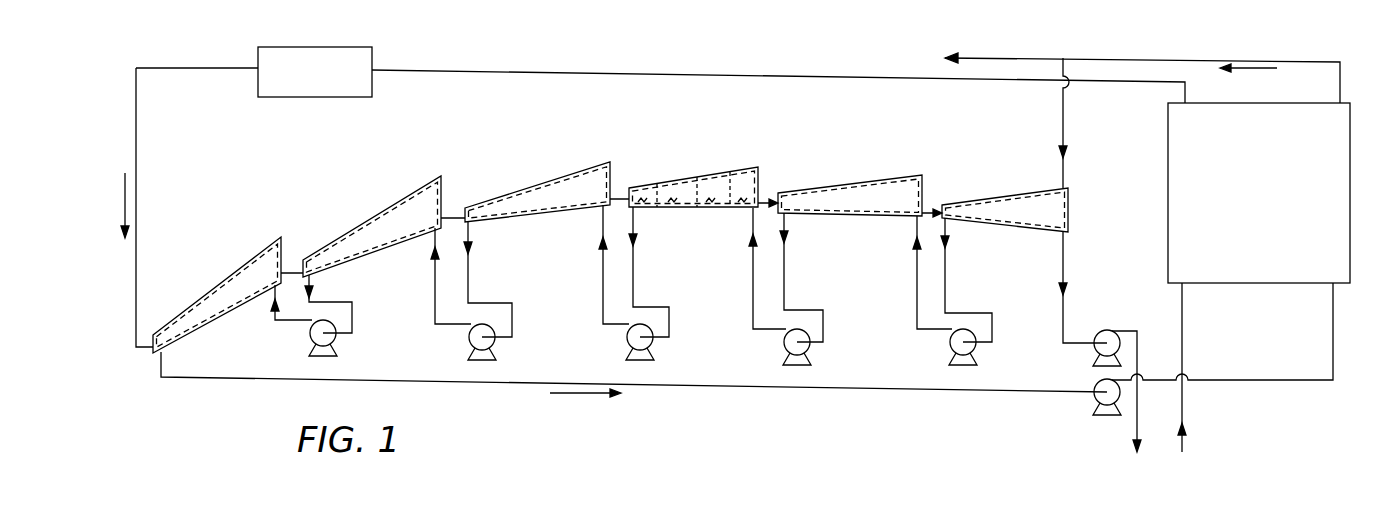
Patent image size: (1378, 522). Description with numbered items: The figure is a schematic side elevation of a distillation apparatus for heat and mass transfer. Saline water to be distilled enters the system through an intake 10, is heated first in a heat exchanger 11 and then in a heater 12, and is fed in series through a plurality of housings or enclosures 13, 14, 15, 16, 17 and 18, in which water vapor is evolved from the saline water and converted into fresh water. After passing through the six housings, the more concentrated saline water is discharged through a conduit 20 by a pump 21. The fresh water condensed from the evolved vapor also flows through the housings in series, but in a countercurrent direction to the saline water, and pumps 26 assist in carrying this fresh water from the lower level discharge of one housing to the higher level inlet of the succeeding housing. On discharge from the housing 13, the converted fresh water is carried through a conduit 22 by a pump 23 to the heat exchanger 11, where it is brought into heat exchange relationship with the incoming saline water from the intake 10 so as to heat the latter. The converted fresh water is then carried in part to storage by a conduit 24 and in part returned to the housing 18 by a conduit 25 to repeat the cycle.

The intake 10 is at (1183, 353).
The heat exchanger 11 is at (1167, 132).
The heater 12 is at (257, 53).
The housing 13 is at (235, 272).
The housing 14 is at (387, 210).
The housing 15 is at (552, 180).
The housing 16 is at (716, 173).
The housing 17 is at (868, 180).
The housing 18 is at (1027, 190).
The conduit 20 is at (1140, 427).
The pump 21 is at (1100, 331).
The conduit 22 is at (667, 387).
The pump 23 is at (1097, 383).
The conduit 24 is at (975, 60).
The conduit 25 is at (1062, 117).
The pumps 26 is at (784, 344).